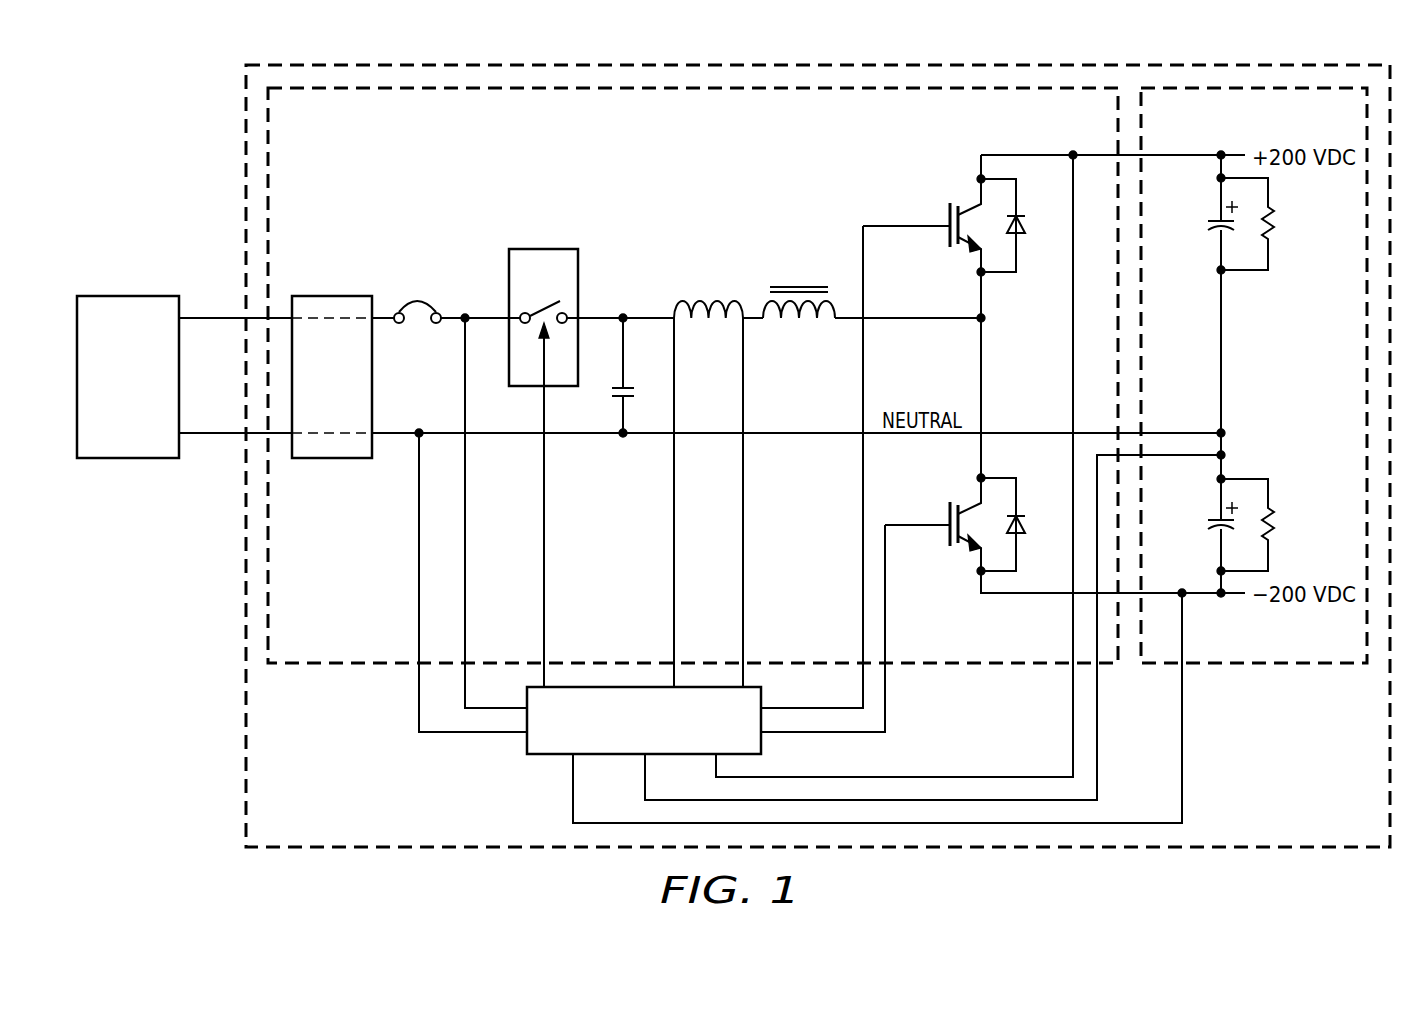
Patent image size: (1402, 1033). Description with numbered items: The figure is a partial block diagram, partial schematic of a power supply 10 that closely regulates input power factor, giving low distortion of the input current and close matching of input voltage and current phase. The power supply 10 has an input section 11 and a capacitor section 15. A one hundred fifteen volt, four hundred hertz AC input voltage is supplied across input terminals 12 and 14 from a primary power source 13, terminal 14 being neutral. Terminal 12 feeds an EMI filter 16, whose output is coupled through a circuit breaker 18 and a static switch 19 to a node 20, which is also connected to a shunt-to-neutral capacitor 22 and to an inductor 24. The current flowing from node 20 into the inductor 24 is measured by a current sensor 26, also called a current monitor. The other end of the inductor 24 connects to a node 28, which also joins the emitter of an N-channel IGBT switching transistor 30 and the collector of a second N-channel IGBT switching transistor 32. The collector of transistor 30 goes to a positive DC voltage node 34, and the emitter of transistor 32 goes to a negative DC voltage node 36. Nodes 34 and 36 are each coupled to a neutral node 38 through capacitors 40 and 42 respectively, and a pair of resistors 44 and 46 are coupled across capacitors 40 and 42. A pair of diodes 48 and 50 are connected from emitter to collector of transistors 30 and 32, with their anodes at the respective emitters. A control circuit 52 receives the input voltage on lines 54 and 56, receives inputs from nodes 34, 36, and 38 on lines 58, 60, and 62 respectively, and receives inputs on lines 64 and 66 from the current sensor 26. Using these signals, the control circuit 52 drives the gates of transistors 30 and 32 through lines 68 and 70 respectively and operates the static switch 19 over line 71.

The power supply 10 is at (246, 628).
The input section 11 is at (343, 664).
The input terminal 12 is at (215, 317).
The primary power source 13 is at (128, 296).
The input terminal 14 is at (215, 437).
The capacitor section 15 is at (1298, 663).
The EMI filter 16 is at (332, 296).
The circuit breaker 18 is at (418, 294).
The static switch 19 is at (550, 311).
The node 20 is at (648, 316).
The shunt-to-neutral capacitor 22 is at (611, 394).
The inductor 24 is at (800, 286).
The current sensor 26 is at (710, 298).
The node 28 is at (982, 298).
The N-channel IGBT switching transistor 30 is at (948, 218).
The N-channel IGBT switching transistor 32 is at (949, 514).
The positive DC voltage node 34 is at (1090, 155).
The negative DC voltage node 36 is at (1026, 594).
The neutral node 38 is at (1223, 347).
The capacitor 40 is at (1208, 227).
The capacitor 42 is at (1208, 525).
The resistor 44 is at (1273, 220).
The resistor 46 is at (1273, 528).
The diode 48 is at (1022, 228).
The diode 50 is at (1020, 524).
The control circuit 52 is at (546, 755).
The line 54 is at (464, 377).
The line 56 is at (418, 534).
The line 58 is at (1071, 723).
The line 60 is at (1183, 740).
The line 62 is at (1098, 732).
The line 64 is at (674, 497).
The line 66 is at (745, 520).
The line 68 is at (862, 381).
The line 70 is at (887, 698).
The line 71 is at (546, 541).